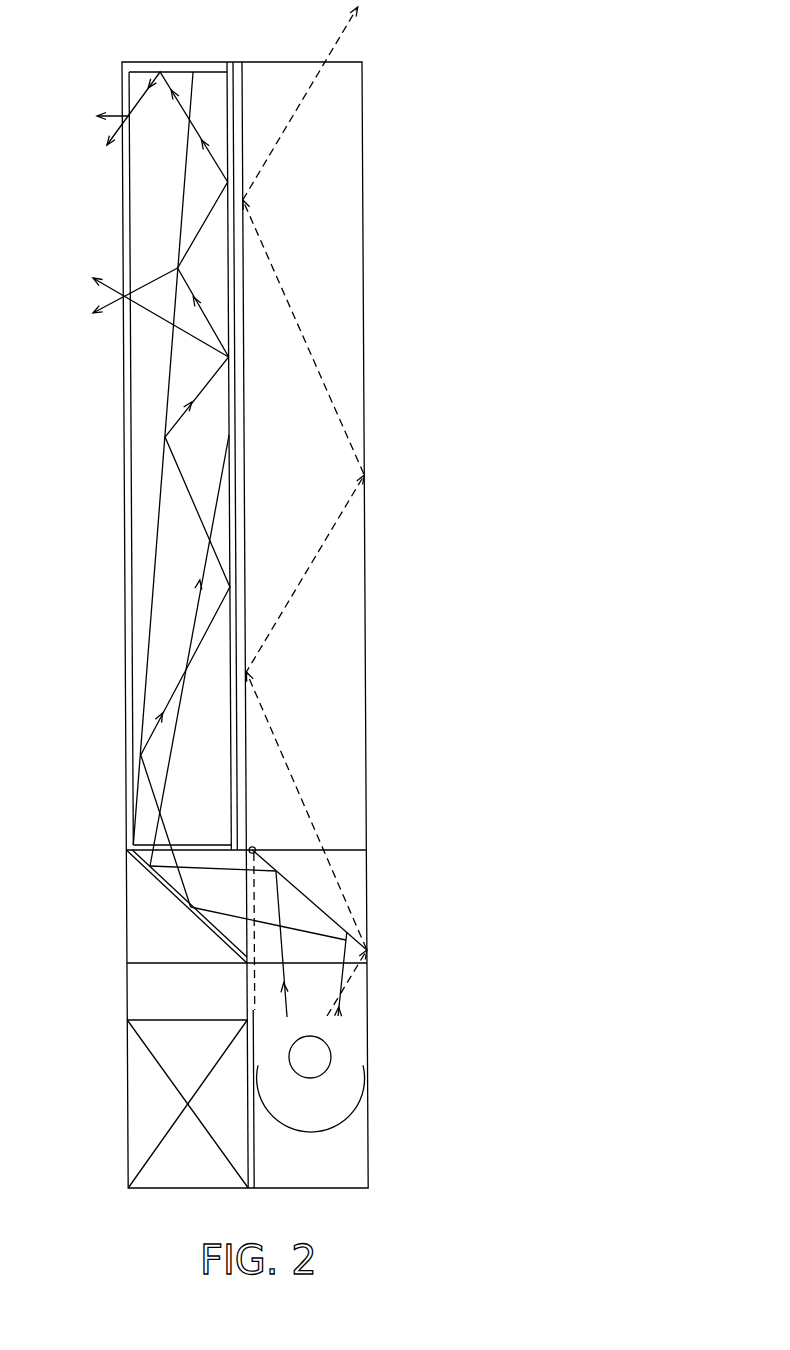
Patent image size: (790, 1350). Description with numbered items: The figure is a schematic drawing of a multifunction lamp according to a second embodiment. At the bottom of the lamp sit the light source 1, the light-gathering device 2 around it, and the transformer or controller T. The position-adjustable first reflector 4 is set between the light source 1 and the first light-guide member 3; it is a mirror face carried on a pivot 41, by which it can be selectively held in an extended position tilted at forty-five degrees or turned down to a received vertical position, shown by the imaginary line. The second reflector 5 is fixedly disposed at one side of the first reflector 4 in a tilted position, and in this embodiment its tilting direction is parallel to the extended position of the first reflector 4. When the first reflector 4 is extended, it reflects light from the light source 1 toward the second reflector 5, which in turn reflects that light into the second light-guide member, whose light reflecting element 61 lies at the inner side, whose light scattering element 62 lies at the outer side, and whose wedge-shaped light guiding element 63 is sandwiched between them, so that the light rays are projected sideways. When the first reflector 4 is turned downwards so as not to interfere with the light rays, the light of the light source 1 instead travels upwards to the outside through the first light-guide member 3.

The light source 1 is at (322, 1056).
The light-gathering device 2 is at (350, 1113).
The first light-guide member 3 is at (105, 480).
The first reflector 4 is at (255, 900).
The pivot 41 is at (256, 848).
The second reflector 5 is at (160, 886).
The light reflecting element 61 is at (237, 612).
The light scattering element 62 is at (128, 388).
The wedge-shaped light guiding element 63 is at (182, 763).
The transformer or controller T is at (152, 1093).